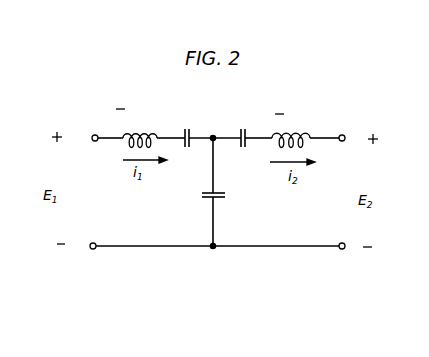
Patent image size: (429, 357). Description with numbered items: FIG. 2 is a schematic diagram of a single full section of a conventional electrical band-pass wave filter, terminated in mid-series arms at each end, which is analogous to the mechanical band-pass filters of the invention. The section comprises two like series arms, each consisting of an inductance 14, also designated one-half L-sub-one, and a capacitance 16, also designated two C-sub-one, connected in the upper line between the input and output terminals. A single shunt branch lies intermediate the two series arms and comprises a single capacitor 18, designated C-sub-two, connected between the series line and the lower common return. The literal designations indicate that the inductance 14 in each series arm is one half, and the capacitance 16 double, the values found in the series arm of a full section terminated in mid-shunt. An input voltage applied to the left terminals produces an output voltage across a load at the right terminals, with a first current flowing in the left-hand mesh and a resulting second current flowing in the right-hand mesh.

The inductance 14 is at (158, 130).
The capacitance 16 is at (185, 149).
The capacitor 18 is at (197, 198).